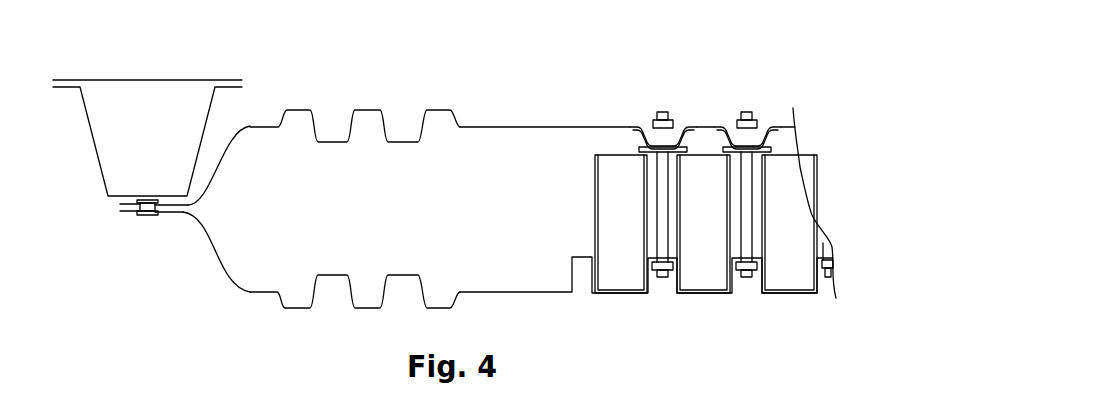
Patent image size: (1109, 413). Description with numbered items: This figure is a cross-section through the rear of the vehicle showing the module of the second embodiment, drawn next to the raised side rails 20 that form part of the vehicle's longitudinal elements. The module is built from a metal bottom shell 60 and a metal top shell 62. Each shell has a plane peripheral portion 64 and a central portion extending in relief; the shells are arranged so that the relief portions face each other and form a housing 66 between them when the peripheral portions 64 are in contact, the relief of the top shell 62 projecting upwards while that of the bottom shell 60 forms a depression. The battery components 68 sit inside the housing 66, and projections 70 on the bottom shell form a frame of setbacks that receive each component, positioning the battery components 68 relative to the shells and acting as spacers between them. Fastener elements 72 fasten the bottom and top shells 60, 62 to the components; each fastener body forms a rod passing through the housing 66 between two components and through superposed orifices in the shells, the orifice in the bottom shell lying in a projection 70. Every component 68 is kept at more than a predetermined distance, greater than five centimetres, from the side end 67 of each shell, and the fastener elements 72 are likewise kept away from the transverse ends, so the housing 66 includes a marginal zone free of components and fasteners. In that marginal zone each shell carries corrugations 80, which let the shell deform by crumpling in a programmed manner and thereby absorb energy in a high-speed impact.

The side rails 20 is at (148, 122).
The bottom shell 60 is at (220, 262).
The top shell 62 is at (250, 123).
The peripheral portion 64 is at (127, 217).
The housing 66 is at (523, 186).
The side end 67 is at (142, 228).
The battery components 68 is at (627, 277).
The projections 70 is at (582, 285).
The fastener elements 72 is at (663, 133).
The corrugations 80 is at (366, 89).